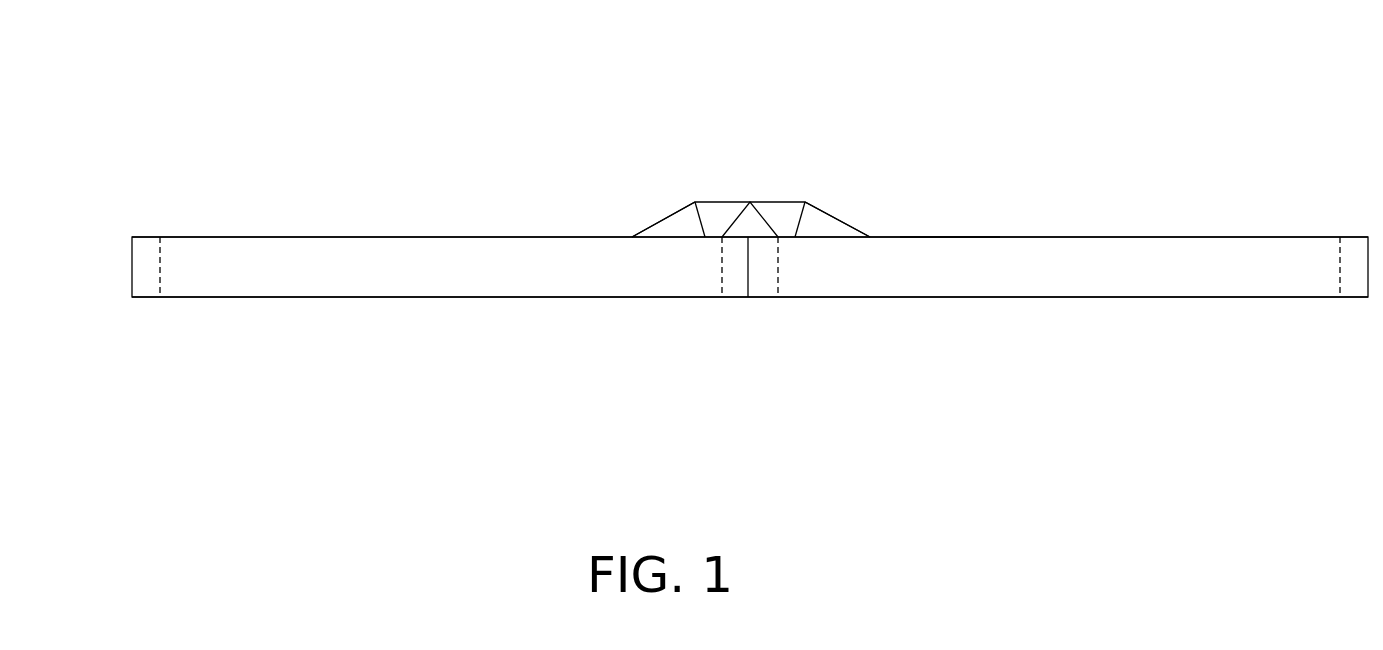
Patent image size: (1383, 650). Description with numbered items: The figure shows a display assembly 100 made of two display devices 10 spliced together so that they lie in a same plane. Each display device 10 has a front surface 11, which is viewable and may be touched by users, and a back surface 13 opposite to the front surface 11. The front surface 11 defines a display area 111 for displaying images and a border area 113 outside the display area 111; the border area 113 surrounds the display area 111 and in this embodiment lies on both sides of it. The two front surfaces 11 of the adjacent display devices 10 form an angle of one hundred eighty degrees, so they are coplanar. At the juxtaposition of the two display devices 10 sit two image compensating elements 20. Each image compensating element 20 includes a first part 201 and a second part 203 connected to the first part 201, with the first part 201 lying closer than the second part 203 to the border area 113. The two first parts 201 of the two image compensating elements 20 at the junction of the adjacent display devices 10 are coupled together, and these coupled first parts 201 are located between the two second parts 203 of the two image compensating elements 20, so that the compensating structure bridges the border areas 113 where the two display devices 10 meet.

The display assembly 100 is at (798, 88).
The display device 10 is at (392, 255).
The front surface 11 is at (283, 235).
The back surface 13 is at (304, 298).
The display area 111 is at (967, 233).
The border area 113 is at (147, 248).
The image compensating element 20 is at (674, 142).
The first part 201 is at (718, 208).
The second part 203 is at (672, 225).